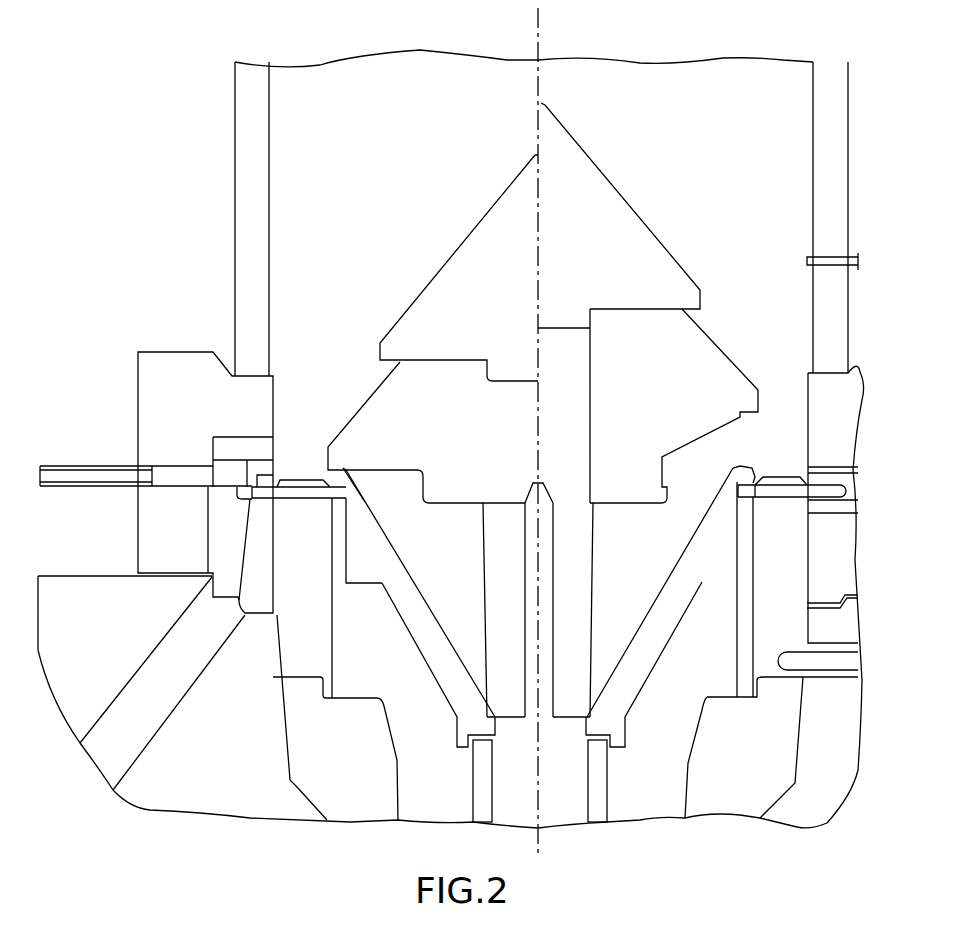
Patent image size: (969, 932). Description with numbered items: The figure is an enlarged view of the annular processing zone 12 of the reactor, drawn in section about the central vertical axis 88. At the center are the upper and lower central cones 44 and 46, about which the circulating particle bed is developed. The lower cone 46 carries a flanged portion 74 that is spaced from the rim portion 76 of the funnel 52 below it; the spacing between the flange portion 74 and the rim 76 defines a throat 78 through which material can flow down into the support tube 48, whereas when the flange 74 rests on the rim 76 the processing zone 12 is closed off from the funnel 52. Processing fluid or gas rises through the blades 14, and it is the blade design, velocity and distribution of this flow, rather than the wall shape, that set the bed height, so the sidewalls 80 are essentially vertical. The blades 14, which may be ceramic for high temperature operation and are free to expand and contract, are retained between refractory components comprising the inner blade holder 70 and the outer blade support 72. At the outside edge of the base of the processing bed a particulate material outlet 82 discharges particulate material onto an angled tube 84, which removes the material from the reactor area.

The annular processing zone 12 is at (787, 466).
The blades 14 is at (780, 490).
The upper central cone 44 is at (710, 343).
The lower central cone 46 is at (610, 202).
The support tube 48 is at (600, 777).
The funnel 52 is at (650, 652).
The inner blade holder 70 is at (333, 609).
The outer blade support 72 is at (148, 386).
The flanged portion 74 is at (333, 473).
The rim portion 76 is at (366, 503).
The throat 78 is at (657, 543).
The sidewalls 80 is at (269, 232).
The particulate material outlet 82 is at (228, 468).
The angled tube 84 is at (176, 705).
The vertical axis 88 is at (538, 33).